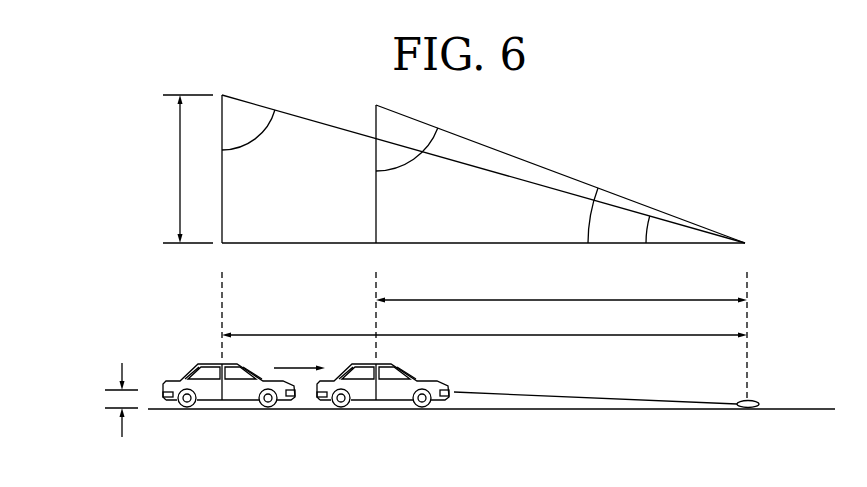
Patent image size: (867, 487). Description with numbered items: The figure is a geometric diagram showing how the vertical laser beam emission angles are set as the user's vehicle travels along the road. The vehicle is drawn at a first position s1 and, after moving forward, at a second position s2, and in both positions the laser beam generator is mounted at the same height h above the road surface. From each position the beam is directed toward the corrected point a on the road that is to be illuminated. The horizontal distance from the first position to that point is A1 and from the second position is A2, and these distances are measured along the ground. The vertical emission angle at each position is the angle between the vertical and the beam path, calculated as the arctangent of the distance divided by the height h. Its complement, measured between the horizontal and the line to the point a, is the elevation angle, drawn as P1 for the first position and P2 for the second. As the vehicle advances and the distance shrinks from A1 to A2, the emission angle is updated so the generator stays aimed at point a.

The height above the ground h is at (159, 266).
The vehicle position s1 (X1, Y1) s1 is at (454, 267).
The vehicle position s2 (X2, Y2) s2 is at (531, 273).
The corrected point a (Xs, Ys) to be illuminated a is at (618, 346).
The elevation angle P1 is at (630, 229).
The elevation angle P2 is at (578, 215).
The distance A1 is at (484, 327).
The distance A2 is at (561, 289).